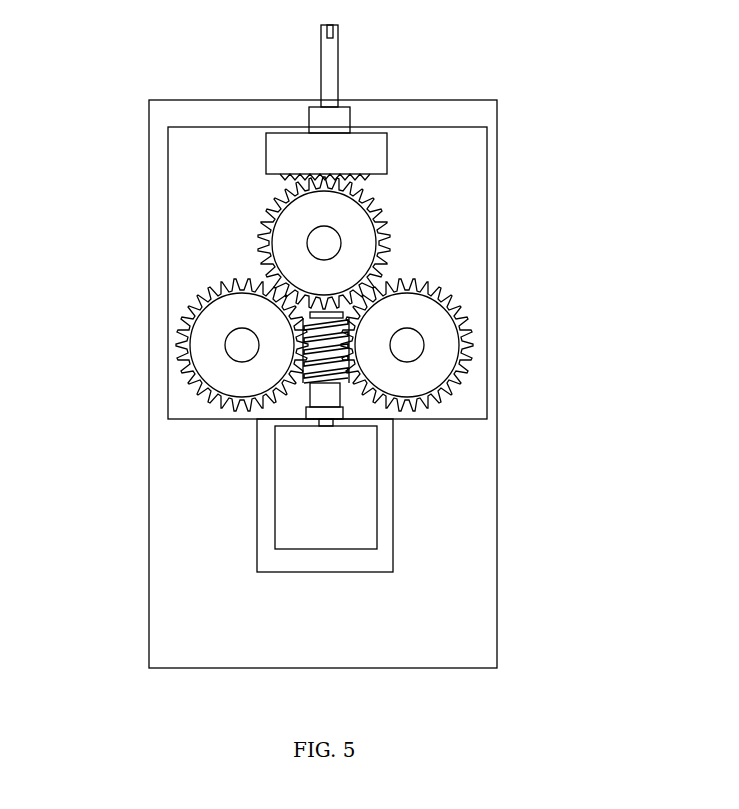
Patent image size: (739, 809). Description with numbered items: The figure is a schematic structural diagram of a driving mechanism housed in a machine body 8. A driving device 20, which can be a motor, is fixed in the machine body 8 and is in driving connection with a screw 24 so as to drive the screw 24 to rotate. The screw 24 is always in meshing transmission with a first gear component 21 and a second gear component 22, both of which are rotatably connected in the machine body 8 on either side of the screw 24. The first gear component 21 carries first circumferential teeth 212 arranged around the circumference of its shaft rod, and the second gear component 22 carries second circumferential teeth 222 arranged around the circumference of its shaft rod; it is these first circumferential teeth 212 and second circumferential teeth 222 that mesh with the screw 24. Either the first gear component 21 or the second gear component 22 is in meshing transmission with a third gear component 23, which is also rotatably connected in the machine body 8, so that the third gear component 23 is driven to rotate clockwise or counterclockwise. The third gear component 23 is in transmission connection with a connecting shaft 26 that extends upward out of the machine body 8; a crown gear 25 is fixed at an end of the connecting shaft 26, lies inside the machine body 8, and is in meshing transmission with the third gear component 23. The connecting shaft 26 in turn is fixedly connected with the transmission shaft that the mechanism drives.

The machine body 8 is at (150, 523).
The driving device 20 is at (378, 487).
The first gear component 21 is at (175, 354).
The first circumferential teeth 212 is at (190, 377).
The second gear component 22 is at (471, 345).
The second circumferential teeth 222 is at (428, 327).
The third gear component 23 is at (361, 228).
The screw 24 is at (337, 383).
The crown gear 25 is at (362, 173).
The connecting shaft 26 is at (330, 62).